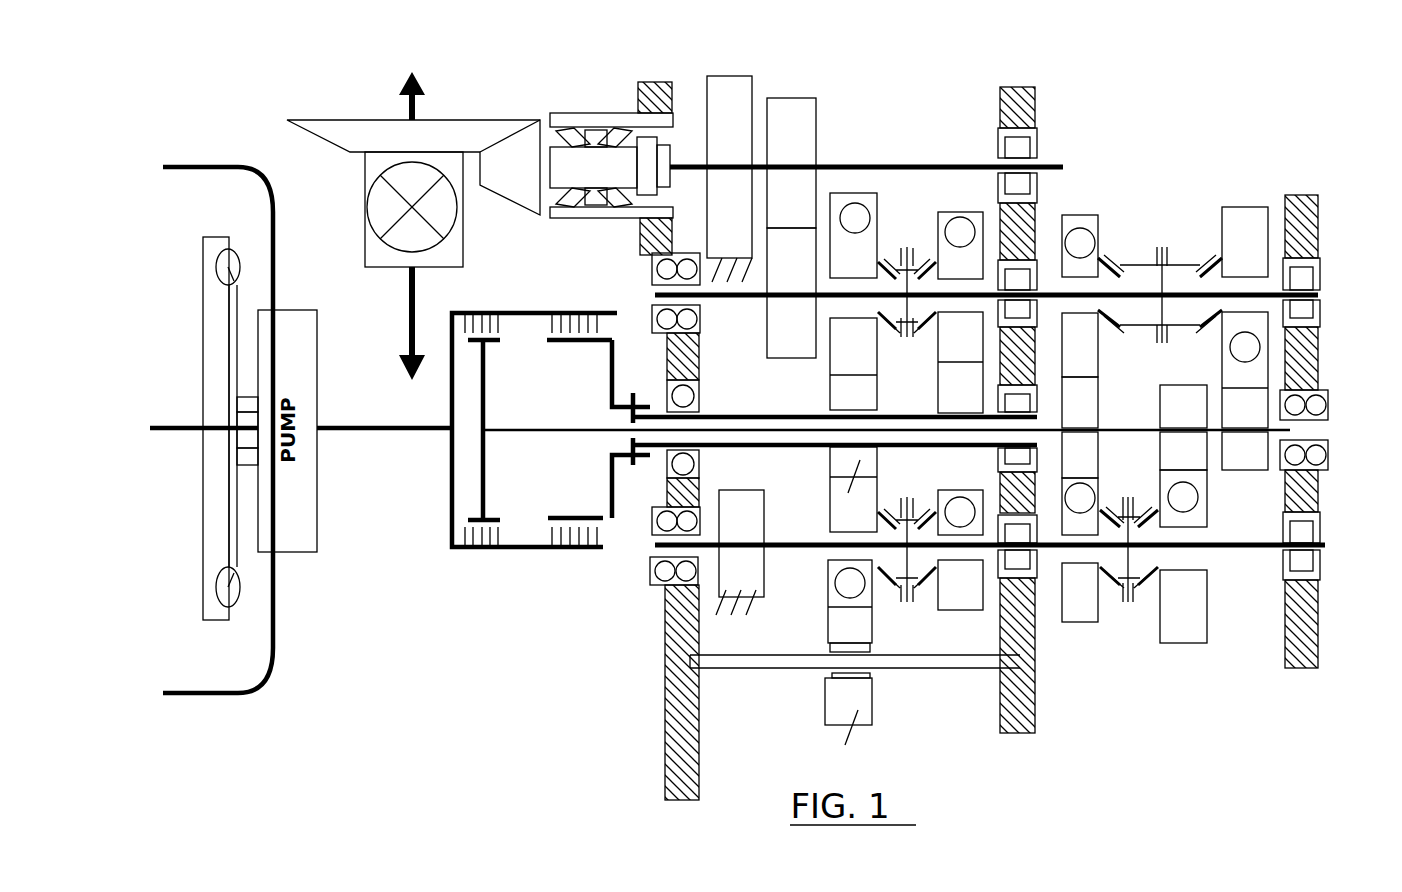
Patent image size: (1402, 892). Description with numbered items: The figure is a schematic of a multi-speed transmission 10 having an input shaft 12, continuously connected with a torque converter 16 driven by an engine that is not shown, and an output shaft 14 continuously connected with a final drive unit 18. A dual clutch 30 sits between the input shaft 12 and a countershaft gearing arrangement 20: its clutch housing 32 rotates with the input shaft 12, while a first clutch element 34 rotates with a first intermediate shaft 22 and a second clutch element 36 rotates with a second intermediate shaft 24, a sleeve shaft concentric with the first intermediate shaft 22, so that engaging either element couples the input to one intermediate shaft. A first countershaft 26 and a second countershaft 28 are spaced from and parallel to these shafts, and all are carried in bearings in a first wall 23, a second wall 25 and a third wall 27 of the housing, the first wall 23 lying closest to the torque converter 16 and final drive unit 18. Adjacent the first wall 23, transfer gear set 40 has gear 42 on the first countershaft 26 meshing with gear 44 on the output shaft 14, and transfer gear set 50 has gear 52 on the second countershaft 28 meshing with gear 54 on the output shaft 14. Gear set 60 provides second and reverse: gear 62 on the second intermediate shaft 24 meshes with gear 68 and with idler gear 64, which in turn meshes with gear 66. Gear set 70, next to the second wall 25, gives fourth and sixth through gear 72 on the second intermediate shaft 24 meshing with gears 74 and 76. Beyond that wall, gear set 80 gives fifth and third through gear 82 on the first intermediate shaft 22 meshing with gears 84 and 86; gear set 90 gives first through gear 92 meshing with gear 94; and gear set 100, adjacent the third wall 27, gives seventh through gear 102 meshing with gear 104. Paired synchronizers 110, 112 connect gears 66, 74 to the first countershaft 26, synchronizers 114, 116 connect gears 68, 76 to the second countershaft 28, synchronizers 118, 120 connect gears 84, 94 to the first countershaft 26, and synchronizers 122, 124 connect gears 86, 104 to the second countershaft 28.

The multi-speed transmission 10 is at (252, 124).
The input member 12 is at (357, 432).
The output member 14 is at (687, 160).
The torque converter 16 is at (203, 531).
The final drive unit 18 is at (504, 88).
The countershaft gearing arrangement 20 is at (1177, 408).
The first intermediate shaft 22 is at (522, 433).
The first wall 23 is at (665, 626).
The second intermediate shaft 24 is at (745, 412).
The second wall 25 is at (1022, 735).
The first countershaft 26 is at (790, 549).
The third wall 27 is at (1298, 670).
The second countershaft 28 is at (1140, 292).
The dual clutch 30 is at (518, 462).
The clutch housing 32 is at (517, 549).
The first clutch element 34 is at (486, 352).
The second clutch element 36 is at (608, 352).
The transfer gear set 40 is at (747, 62).
The gear 42 is at (740, 552).
The gear 44 is at (729, 179).
The transfer gear set 50 is at (825, 192).
The gear 52 is at (791, 293).
The gear 54 is at (791, 163).
The gear set 60 is at (861, 375).
The gear 62 is at (853, 364).
The idler gear 64 is at (850, 606).
The gear 66 is at (853, 489).
The gear 68 is at (853, 235).
The gear set 70 is at (963, 667).
The gear 72 is at (960, 362).
The gear 74 is at (960, 550).
The gear 76 is at (960, 245).
The gear set 80 is at (1103, 379).
The gear 82 is at (1080, 402).
The gear 84 is at (1080, 592).
The gear 86 is at (1080, 345).
The gear set 90 is at (1185, 559).
The gear 92 is at (1183, 406).
The gear 94 is at (1183, 606).
The gear set 100 is at (1257, 295).
The gear 102 is at (1245, 370).
The gear 104 is at (1245, 242).
The synchronizer 110 is at (886, 575).
The synchronizer 112 is at (923, 510).
The synchronizer 114 is at (890, 327).
The synchronizer 116 is at (923, 253).
The synchronizer 118 is at (1112, 589).
The synchronizer 120 is at (1140, 511).
The synchronizer 122 is at (1120, 330).
The synchronizer 124 is at (1172, 265).